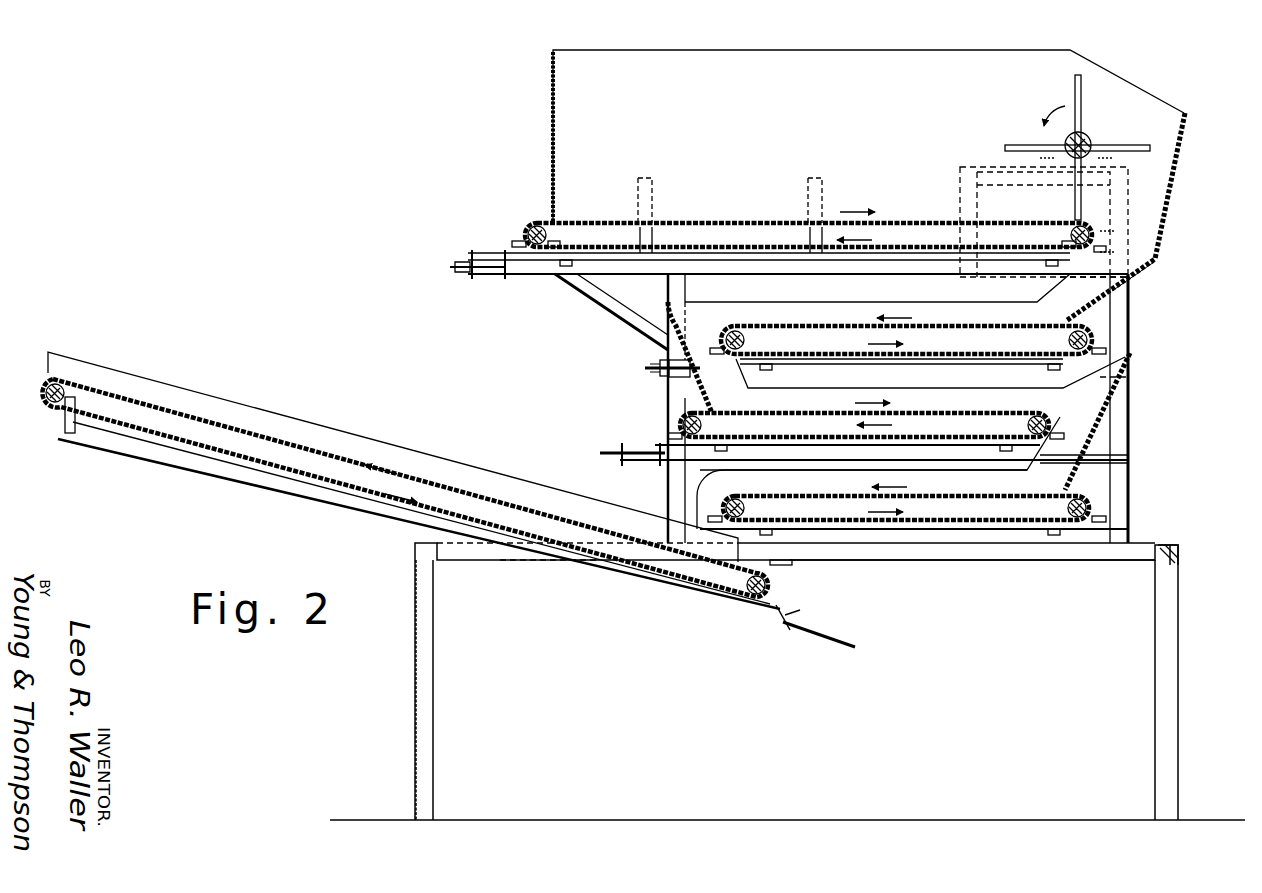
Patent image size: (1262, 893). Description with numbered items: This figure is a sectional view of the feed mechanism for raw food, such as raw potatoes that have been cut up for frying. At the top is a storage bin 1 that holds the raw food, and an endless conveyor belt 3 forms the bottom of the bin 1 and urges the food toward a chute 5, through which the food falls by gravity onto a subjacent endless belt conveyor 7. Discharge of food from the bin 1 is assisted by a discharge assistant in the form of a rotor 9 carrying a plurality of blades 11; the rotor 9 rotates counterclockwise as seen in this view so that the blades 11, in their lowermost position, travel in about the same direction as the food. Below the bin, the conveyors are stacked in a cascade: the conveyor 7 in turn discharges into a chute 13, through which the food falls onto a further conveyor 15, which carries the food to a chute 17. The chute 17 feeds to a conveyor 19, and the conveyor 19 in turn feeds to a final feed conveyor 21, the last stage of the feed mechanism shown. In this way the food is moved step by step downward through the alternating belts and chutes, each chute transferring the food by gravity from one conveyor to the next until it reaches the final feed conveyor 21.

The storage bin 1 is at (795, 87).
The endless conveyor belt 3 is at (707, 203).
The chute 5 is at (1142, 232).
The endless belt conveyor 7 is at (820, 322).
The rotor 9 is at (1092, 133).
The blades 11 is at (1083, 85).
The chute 13 is at (695, 338).
The conveyor 15 is at (885, 402).
The chute 17 is at (1092, 415).
The conveyor 19 is at (790, 492).
The final feed conveyor 21 is at (523, 507).